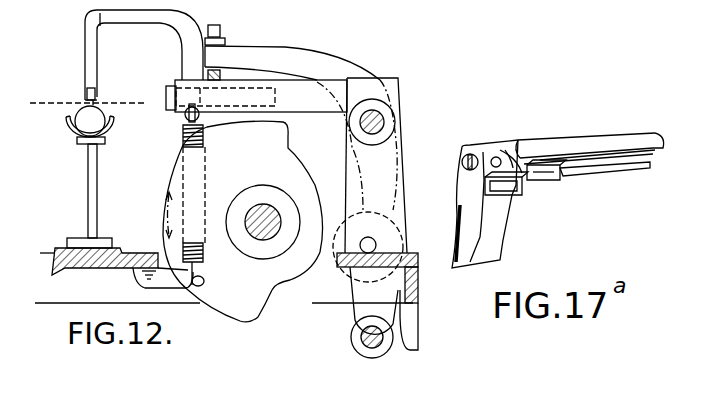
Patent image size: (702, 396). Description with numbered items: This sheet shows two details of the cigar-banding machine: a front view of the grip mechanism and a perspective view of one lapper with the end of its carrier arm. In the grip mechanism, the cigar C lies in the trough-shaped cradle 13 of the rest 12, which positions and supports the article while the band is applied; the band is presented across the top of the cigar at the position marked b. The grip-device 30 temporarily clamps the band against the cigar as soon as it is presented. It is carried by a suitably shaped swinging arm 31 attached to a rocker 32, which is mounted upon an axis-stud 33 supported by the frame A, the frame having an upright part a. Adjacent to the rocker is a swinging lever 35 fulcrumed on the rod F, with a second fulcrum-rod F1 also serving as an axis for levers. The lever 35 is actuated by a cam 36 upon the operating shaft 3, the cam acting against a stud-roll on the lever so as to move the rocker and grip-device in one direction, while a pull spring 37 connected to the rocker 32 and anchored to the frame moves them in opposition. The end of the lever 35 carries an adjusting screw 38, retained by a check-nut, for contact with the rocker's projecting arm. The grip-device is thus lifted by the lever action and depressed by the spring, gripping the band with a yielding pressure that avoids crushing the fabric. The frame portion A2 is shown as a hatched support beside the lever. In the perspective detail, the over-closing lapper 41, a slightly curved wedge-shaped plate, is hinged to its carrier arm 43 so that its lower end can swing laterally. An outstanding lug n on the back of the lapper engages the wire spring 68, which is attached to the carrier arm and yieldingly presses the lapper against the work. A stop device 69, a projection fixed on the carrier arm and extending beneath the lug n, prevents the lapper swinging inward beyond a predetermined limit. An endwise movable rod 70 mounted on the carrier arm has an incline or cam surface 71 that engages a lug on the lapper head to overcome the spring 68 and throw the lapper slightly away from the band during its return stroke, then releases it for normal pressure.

In FIG. 12, the swinging arm 31 is at (90, 43).
In FIG. 12, the grip-device 30 is at (88, 100).
In FIG. 12, the band position across cigar b is at (79, 103).
In FIG. 12, the cigar C is at (90, 121).
In FIG. 12, the trough-shaped cradle 13 is at (72, 135).
In FIG. 12, the rest 12 is at (88, 150).
In FIG. 12, the frame A is at (101, 257).
In FIG. 12, the rocker 32 is at (240, 112).
In FIG. 12, the axis-stud 33 is at (167, 95).
In FIG. 12, the adjusting screw 38 is at (221, 30).
In FIG. 12, the swinging lever 35 is at (315, 62).
In FIG. 12, the pull spring 37 is at (186, 138).
In FIG. 12, the cam 36 is at (243, 221).
In FIG. 12, the operating shaft 3 is at (263, 222).
In FIG. 12, the upright part of the frame a is at (397, 83).
In FIG. 12, the fulcrum-rod F is at (386, 122).
In FIG. 12, the fulcrum-rod F1 is at (364, 348).
In FIG. 12, the frame plate A2 is at (418, 278).
In FIG. 17a, the over-closing lapper 41 is at (463, 214).
In FIG. 17a, the lug n is at (513, 165).
In FIG. 17a, the carrier arm 43 is at (565, 145).
In FIG. 17a, the wire spring 68 is at (615, 148).
In FIG. 17a, the endwise movable rod 70 is at (613, 171).
In FIG. 17a, the incline or cam surface 71 is at (545, 185).
In FIG. 17a, the stop device 69 is at (513, 196).